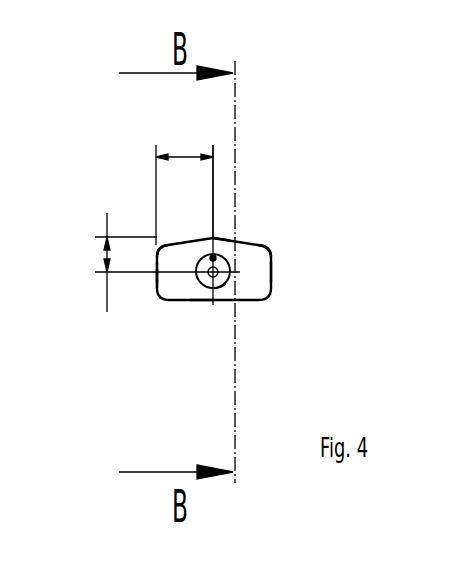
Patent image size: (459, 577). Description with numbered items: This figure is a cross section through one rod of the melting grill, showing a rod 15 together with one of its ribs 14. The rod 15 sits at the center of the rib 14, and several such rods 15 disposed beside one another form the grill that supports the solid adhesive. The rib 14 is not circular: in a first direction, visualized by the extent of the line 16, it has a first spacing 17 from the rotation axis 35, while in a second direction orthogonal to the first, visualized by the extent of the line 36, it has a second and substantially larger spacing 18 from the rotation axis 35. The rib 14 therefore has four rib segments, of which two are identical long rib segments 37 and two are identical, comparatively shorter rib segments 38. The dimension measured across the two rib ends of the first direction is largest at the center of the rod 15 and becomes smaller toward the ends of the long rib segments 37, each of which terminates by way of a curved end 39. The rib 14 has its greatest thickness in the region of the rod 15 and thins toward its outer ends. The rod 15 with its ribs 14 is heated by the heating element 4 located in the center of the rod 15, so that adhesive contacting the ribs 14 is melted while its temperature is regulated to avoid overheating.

The heating element 4 is at (200, 282).
The rib 14 is at (245, 235).
The rod 15 is at (224, 287).
The line 16 is at (213, 305).
The first spacing 17 is at (107, 254).
The second spacing 18 is at (185, 157).
The rotation axis 35 is at (219, 281).
The line 36 is at (157, 278).
The long rib segment 37 is at (156, 243).
The short rib segment 38 is at (220, 232).
The curved end 39 is at (157, 272).